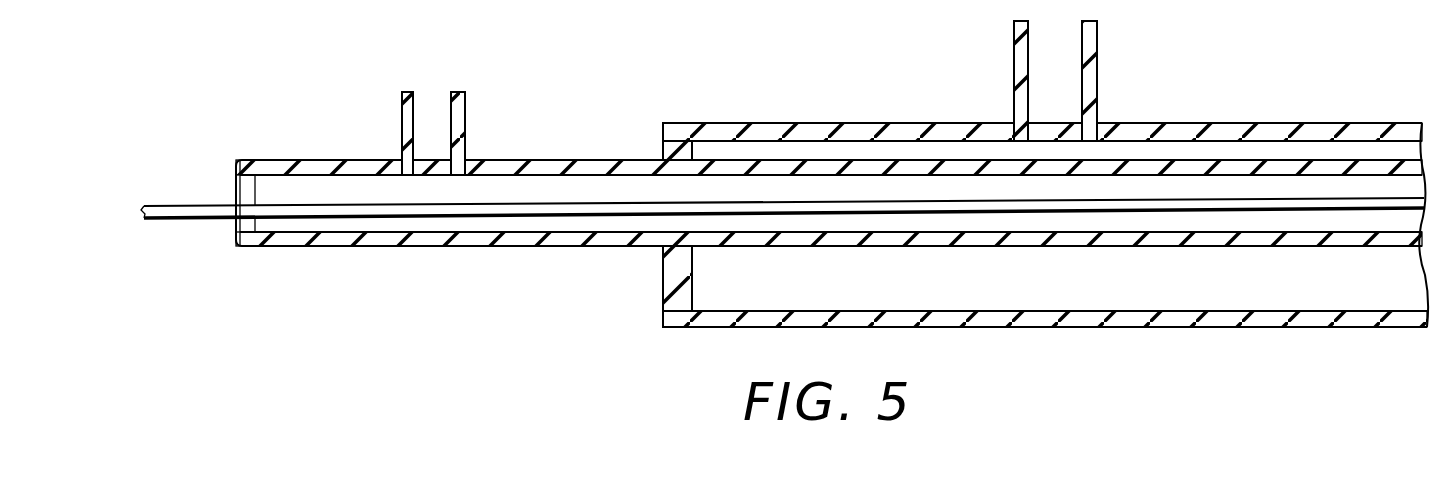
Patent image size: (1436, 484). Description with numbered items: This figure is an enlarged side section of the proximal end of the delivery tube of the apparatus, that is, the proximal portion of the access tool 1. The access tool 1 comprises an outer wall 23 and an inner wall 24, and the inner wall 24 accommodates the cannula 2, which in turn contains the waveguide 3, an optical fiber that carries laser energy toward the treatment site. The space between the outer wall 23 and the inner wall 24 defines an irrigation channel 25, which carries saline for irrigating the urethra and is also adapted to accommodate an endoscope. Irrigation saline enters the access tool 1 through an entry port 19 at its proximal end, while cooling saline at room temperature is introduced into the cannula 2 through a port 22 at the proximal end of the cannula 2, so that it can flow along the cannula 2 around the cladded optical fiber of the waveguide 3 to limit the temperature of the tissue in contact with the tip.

The access tool 1 is at (1045, 218).
The cannula 2 is at (631, 237).
The waveguide 3 is at (328, 213).
The entry port 19 is at (1052, 140).
The port 22 is at (438, 128).
The outer wall 23 is at (728, 130).
The inner wall 24 is at (834, 165).
The irrigation channel 25 is at (1158, 302).